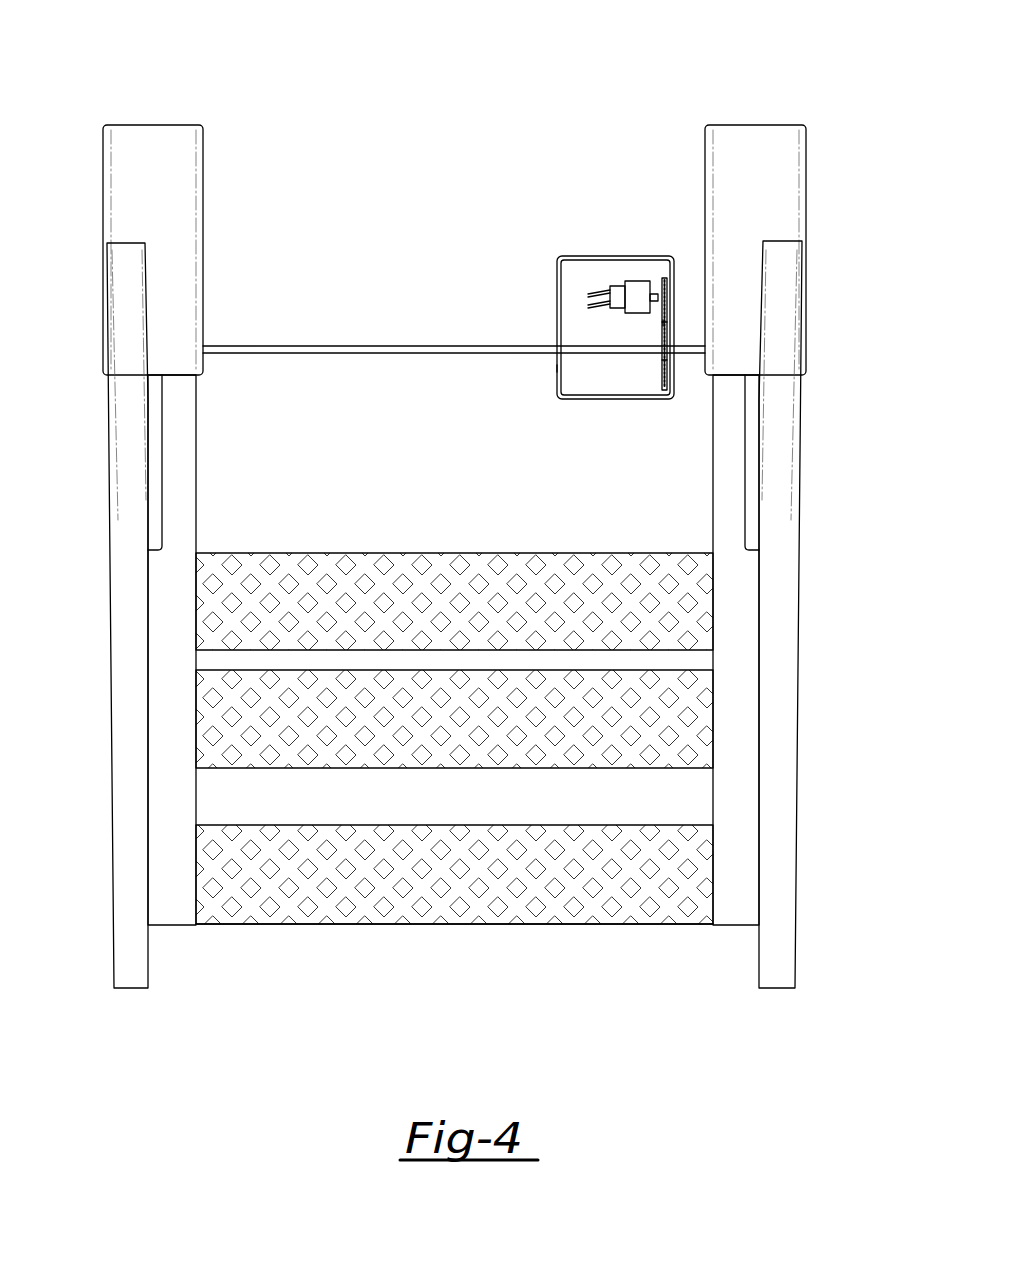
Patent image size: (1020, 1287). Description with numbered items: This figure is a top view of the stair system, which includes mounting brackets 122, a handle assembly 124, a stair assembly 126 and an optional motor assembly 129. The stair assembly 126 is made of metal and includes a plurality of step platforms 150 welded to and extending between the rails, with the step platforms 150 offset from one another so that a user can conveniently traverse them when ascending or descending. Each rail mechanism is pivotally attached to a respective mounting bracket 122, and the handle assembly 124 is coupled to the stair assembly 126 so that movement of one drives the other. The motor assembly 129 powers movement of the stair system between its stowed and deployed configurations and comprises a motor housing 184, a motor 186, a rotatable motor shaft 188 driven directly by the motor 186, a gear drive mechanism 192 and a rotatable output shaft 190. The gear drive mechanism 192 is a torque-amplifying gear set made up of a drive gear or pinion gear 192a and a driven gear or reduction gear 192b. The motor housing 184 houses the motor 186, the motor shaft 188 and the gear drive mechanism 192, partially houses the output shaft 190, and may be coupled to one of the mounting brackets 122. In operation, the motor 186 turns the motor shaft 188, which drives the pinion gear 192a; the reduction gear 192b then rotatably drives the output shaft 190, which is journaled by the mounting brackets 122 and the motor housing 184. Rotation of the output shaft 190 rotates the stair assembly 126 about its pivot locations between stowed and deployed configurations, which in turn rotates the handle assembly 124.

The mounting bracket 122 is at (116, 119).
The handle assembly 124 is at (800, 690).
The stair assembly 126 is at (237, 934).
The motor assembly 129 is at (550, 370).
The step platform 150 is at (356, 570).
The motor housing 184 is at (557, 273).
The motor 186 is at (636, 281).
The motor shaft 188 is at (658, 288).
The output shaft 190 is at (302, 348).
The gear drive mechanism 192 is at (657, 371).
The pinion gear 192a is at (660, 323).
The reduction gear 192b is at (660, 360).